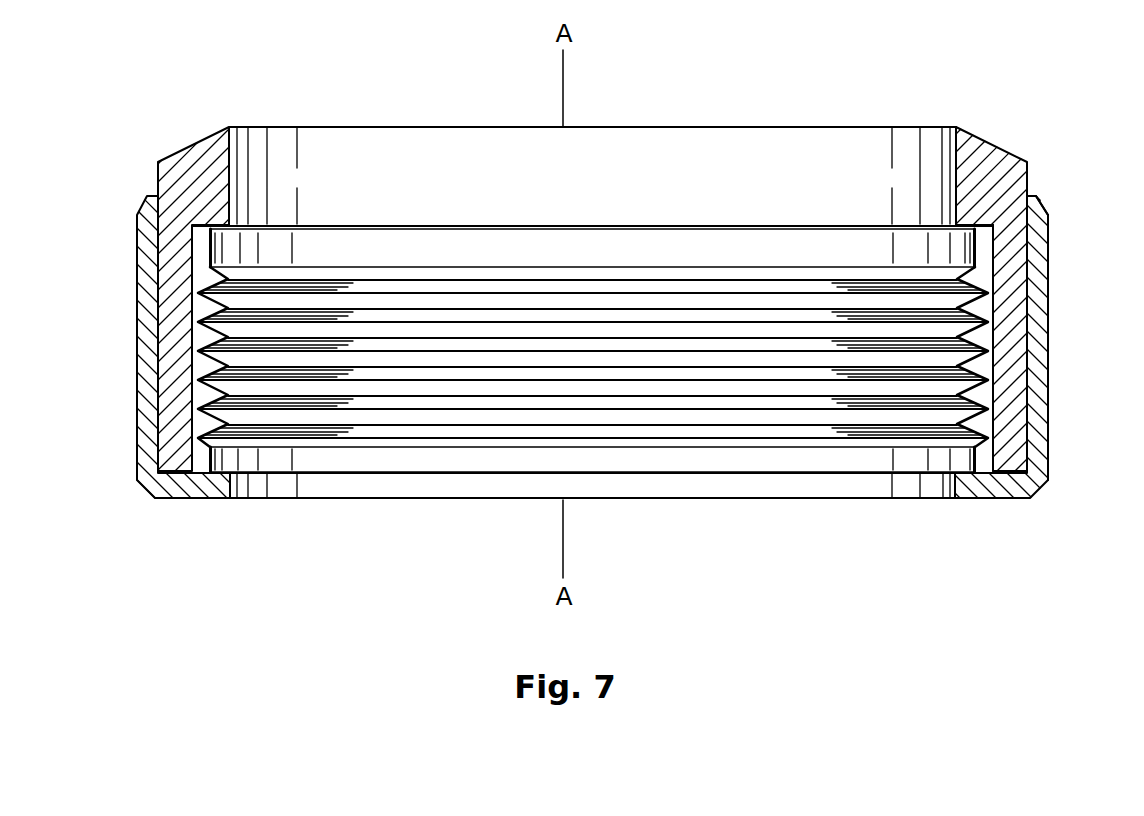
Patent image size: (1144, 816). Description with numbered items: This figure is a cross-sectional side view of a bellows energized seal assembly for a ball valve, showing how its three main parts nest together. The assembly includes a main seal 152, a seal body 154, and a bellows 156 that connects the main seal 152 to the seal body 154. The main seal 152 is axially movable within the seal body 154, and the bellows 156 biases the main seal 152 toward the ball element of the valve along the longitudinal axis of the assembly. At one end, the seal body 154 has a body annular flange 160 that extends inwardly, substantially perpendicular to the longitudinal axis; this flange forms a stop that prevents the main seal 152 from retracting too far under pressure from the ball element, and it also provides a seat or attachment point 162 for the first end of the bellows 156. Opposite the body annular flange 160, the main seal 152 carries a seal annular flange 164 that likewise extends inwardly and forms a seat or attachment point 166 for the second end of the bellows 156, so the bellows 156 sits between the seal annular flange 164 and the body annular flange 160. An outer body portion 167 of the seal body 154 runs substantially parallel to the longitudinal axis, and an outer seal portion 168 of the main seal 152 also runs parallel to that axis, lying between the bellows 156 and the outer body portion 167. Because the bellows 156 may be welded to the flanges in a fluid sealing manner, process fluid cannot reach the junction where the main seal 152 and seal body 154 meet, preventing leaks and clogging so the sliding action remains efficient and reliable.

The main seal 152 is at (988, 140).
The seal body 154 is at (1042, 298).
The bellows 156 is at (205, 404).
The body annular flange 160 is at (1003, 490).
The attachment point 162 is at (977, 458).
The seal annular flange 164 is at (963, 200).
The attachment point 166 is at (1012, 193).
The outer body portion 167 is at (1045, 407).
The outer seal portion 168 is at (1012, 252).